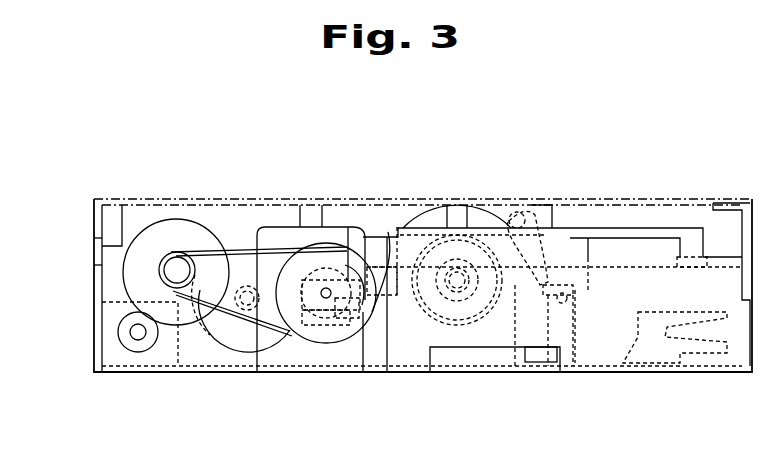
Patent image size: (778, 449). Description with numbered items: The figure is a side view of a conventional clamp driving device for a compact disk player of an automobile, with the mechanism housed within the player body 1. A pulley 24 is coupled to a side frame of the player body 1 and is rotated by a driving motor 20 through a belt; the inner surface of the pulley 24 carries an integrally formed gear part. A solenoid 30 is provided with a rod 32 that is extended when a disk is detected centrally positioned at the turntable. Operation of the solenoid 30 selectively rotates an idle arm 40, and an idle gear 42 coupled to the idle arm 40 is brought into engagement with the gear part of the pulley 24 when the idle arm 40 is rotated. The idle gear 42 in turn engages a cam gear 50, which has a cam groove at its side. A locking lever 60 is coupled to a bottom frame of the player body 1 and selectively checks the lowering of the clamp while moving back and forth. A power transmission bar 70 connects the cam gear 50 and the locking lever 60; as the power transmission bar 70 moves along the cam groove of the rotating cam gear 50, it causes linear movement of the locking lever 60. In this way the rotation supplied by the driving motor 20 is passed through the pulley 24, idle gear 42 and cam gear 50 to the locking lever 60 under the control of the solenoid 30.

The player body 1 is at (90, 196).
The driving motor 20 is at (117, 348).
The pulley 24 is at (315, 262).
The solenoid 30 is at (315, 325).
The rod 32 is at (340, 320).
The idle arm 40 is at (345, 280).
The idle gear 42 is at (386, 290).
The cam gear 50 is at (463, 333).
The locking lever 60 is at (605, 365).
The power transmission bar 70 is at (528, 218).